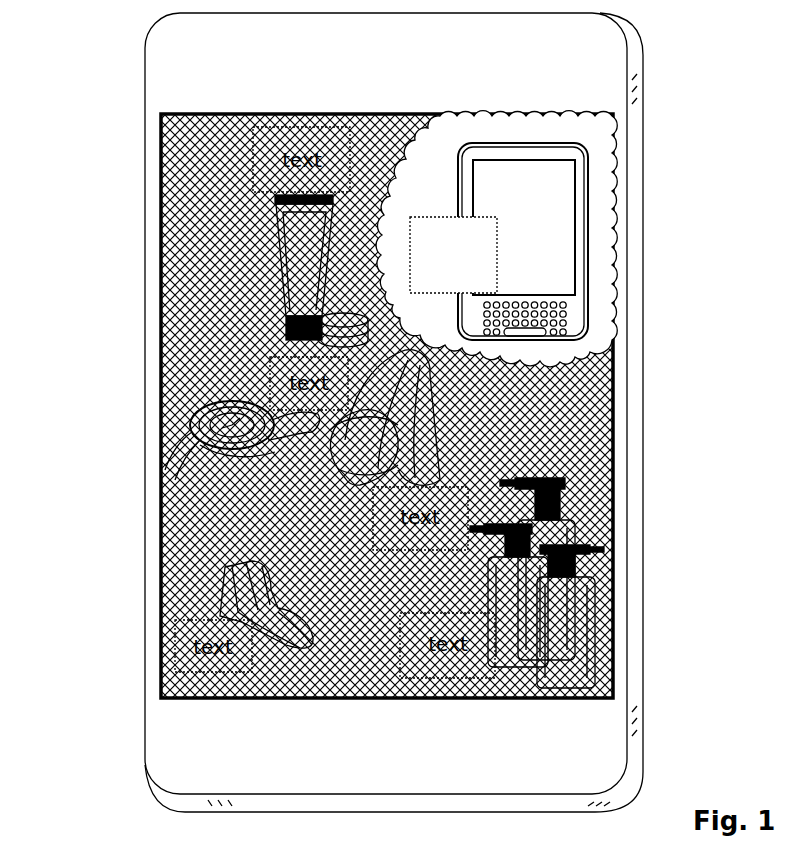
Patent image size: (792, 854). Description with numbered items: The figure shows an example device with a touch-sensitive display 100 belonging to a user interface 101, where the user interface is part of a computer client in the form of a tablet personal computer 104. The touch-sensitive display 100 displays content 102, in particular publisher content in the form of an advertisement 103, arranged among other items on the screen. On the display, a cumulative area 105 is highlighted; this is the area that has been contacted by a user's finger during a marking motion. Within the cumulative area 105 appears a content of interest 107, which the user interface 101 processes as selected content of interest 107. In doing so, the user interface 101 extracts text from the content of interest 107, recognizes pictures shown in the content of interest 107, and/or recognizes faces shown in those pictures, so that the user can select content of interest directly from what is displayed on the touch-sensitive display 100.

The touch-sensitive display 100 is at (582, 693).
The user interface 101 is at (556, 438).
The content 102 is at (330, 487).
The advertisement 103 is at (400, 272).
The tablet personal computer 104 is at (144, 90).
The cumulative area 105 is at (598, 324).
The content of interest 107 is at (528, 200).